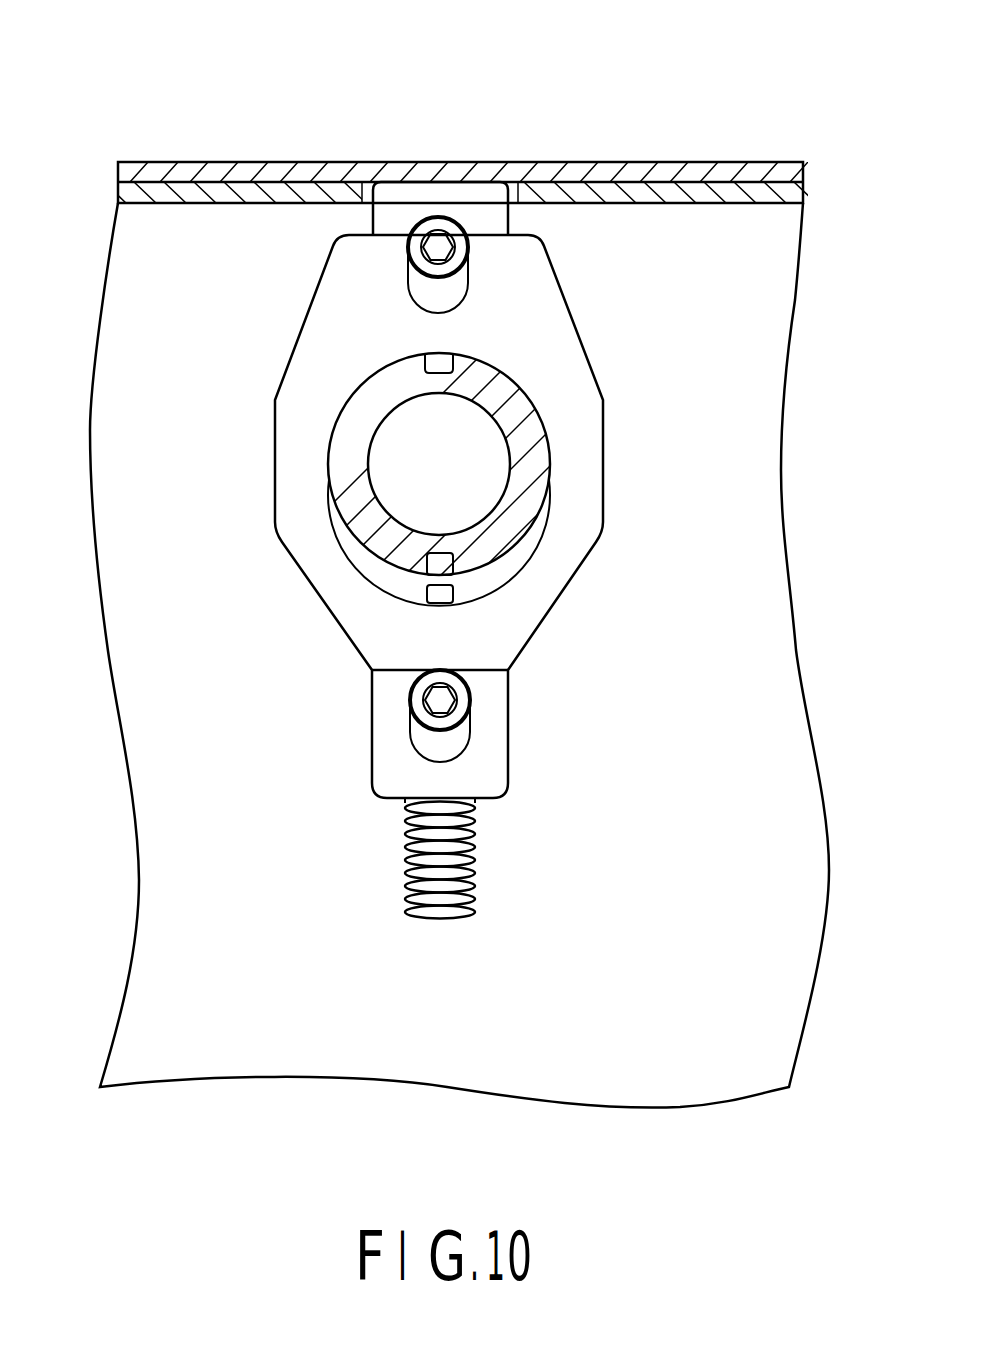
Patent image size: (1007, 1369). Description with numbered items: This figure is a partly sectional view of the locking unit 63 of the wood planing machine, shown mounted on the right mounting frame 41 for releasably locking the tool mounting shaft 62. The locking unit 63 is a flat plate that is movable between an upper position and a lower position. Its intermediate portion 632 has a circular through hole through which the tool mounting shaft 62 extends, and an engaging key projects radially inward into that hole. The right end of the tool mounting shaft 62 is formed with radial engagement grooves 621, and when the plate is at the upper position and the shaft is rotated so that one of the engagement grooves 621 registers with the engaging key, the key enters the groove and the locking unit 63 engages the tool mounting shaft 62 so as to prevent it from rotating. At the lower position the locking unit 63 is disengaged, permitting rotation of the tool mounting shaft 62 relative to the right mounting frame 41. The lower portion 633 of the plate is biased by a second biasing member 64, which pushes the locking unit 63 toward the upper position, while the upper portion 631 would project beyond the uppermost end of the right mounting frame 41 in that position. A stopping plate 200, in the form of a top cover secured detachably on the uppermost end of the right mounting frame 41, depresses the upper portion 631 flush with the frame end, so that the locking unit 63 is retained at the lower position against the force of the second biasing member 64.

The stopping plate 200 is at (713, 163).
The right mounting frame 41 is at (748, 627).
The locking unit 63 is at (528, 256).
The upper portion 631 is at (480, 197).
The tool mounting shaft 62 is at (357, 408).
The engagement grooves 621 is at (434, 362).
The intermediate portion 632 is at (437, 590).
The lower portion 633 is at (447, 805).
The second biasing member 64 is at (475, 872).